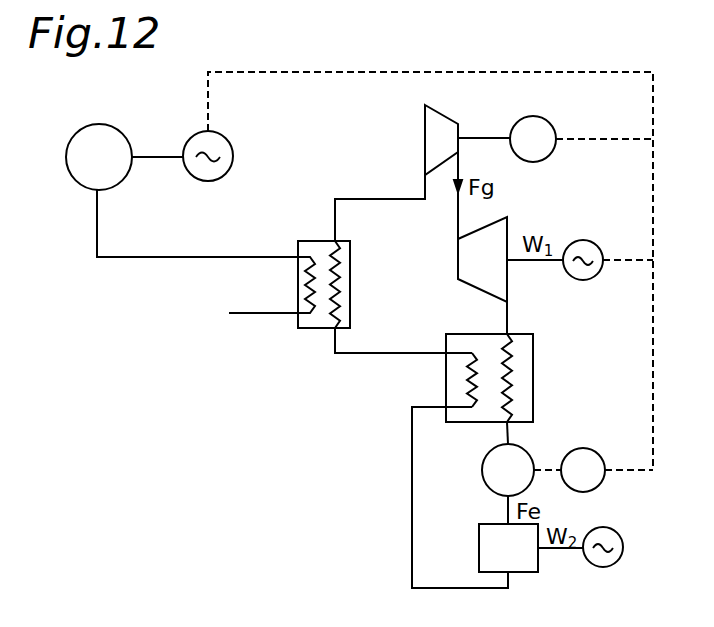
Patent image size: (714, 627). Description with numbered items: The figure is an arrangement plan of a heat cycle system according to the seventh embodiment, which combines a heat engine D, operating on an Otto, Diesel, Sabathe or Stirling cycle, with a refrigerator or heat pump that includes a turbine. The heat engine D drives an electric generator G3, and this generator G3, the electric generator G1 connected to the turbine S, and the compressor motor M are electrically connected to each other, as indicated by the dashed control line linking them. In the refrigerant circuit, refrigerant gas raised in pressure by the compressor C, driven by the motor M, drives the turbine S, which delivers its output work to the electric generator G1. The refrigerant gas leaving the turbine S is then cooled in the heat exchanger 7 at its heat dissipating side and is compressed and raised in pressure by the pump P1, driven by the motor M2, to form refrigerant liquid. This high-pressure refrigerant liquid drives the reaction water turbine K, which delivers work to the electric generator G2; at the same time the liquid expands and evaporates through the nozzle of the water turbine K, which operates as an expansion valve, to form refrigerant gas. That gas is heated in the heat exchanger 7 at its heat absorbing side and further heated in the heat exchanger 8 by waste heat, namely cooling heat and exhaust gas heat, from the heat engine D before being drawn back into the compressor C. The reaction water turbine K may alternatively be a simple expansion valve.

The heat exchanger 7 is at (533, 380).
The heat exchanger 8 is at (350, 283).
The heat engine D is at (99, 157).
The electric generator G1 is at (583, 246).
The electric generator G2 is at (603, 570).
The electric generator G3 is at (222, 171).
The compressor C is at (441, 140).
The turbine S is at (482, 259).
The compressor motor M is at (533, 139).
The motor M2 is at (583, 470).
The pump P1 is at (508, 470).
The reaction water turbine K is at (508, 548).